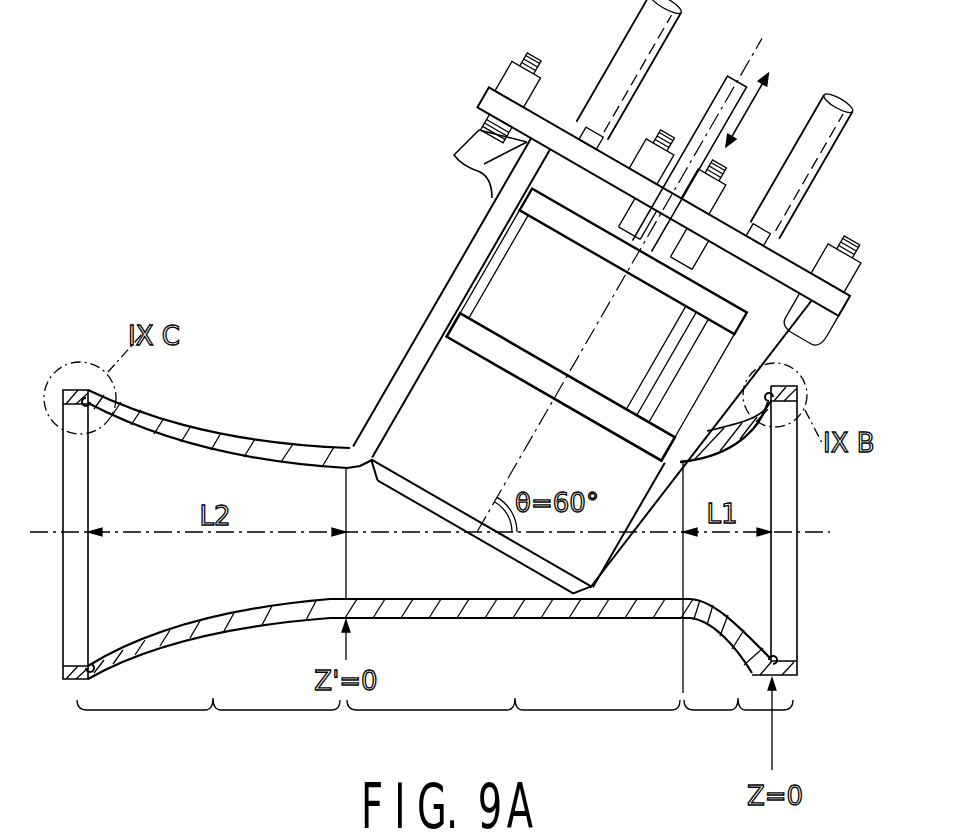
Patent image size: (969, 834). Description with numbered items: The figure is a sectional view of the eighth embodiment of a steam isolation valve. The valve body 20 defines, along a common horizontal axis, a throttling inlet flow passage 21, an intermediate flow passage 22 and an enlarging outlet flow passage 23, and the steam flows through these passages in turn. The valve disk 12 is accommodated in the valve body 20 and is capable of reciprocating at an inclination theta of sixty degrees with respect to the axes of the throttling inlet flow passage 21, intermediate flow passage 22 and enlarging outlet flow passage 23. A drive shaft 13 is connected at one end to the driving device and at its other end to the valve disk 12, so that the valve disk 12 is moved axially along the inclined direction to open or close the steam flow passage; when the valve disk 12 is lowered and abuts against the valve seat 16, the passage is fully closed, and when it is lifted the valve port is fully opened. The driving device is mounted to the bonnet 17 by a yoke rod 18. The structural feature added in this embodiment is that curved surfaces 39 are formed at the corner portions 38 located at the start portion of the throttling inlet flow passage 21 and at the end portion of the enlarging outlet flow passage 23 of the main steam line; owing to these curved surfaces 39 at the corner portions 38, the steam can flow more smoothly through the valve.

The valve disk 12 is at (500, 275).
The drive shaft 13 is at (704, 130).
The valve seat 16 is at (378, 458).
The bonnet 17 is at (495, 110).
The yoke rod 18 is at (625, 42).
The valve body 20 is at (405, 385).
The throttling inlet flow passage 21 is at (736, 578).
The intermediate flow passage 22 is at (511, 678).
The enlarging outlet flow passage 23 is at (224, 573).
The corner portions 38 is at (97, 408).
The curved surfaces 39 is at (87, 405).